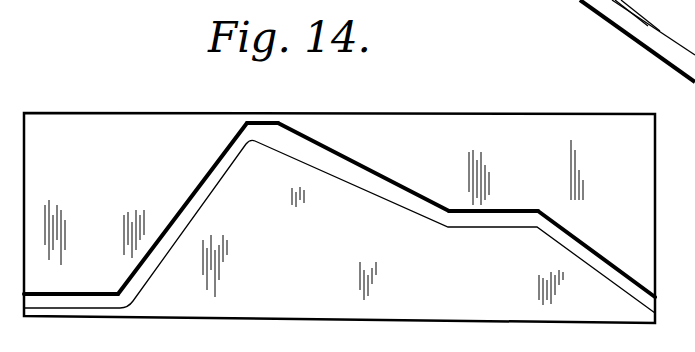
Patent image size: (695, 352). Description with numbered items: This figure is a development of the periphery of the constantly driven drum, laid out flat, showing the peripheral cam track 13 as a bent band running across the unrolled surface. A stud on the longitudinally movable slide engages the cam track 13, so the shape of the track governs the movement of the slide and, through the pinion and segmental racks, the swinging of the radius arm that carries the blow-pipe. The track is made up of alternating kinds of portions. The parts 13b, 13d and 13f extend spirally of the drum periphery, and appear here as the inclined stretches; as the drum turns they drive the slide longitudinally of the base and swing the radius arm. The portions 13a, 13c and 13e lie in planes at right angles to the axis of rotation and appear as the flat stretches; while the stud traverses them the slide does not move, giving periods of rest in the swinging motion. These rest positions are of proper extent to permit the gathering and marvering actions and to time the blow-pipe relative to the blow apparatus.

The cam track 13 is at (378, 163).
The track portion 13a is at (88, 280).
The track part 13b is at (592, 262).
The track portion 13c is at (505, 218).
The track part 13d is at (350, 168).
The track portion 13e is at (270, 131).
The track part 13f is at (200, 187).